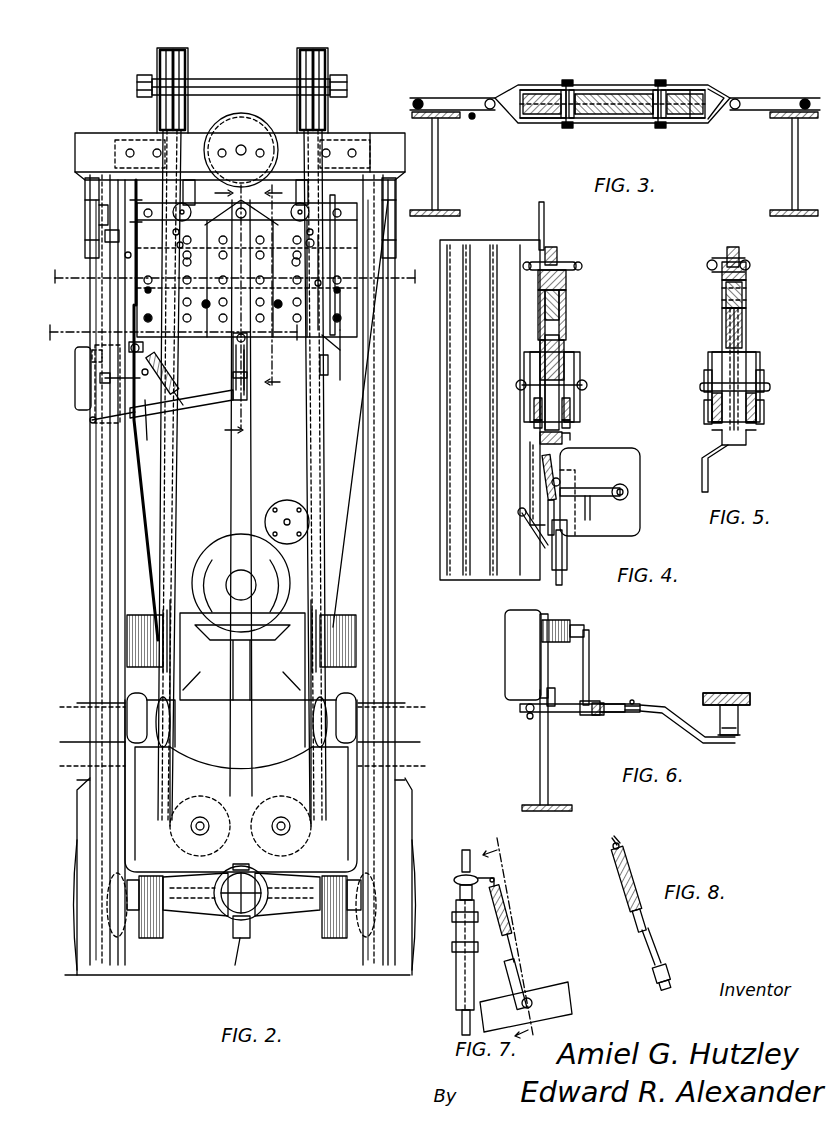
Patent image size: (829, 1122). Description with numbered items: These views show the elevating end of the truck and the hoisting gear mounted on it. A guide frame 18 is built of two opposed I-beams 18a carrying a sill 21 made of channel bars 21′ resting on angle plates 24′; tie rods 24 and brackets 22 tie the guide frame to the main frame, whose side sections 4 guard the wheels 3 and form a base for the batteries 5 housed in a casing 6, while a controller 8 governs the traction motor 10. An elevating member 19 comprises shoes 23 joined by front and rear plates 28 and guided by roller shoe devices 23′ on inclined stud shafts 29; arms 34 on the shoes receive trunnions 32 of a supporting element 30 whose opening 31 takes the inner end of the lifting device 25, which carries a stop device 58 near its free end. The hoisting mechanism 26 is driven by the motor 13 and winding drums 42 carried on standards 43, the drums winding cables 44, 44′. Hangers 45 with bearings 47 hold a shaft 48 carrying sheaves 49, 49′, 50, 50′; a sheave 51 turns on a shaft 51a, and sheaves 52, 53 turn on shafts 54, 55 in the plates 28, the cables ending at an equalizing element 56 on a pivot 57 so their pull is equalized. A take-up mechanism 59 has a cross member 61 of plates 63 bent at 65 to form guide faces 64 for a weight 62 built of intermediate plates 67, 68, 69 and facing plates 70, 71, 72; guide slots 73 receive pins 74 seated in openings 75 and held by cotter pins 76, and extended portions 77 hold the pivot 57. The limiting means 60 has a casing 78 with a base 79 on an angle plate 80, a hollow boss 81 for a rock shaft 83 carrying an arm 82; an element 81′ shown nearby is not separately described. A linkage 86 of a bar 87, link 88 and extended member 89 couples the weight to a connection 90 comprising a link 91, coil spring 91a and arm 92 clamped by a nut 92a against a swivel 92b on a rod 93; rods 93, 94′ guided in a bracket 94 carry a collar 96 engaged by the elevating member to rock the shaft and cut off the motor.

In FIG. 2, the wheel 3 is at (414, 1000).
In FIG. 2, the side section 4 is at (225, 311).
In FIG. 2, the battery 5 is at (277, 287).
In FIG. 2, the casing 6 is at (155, 344).
In FIG. 7, the controller 8 is at (517, 938).
In FIG. 2, the traction or driving motor 10 is at (240, 945).
In FIG. 2, the hoisting or elevating motor 13 is at (241, 583).
In FIG. 2, the guide frame 18 is at (92, 560).
In FIG. 4, the guide frame 18 is at (496, 245).
In FIG. 2, the channel or I-beam 18a is at (92, 638).
In FIG. 3, the channel or I-beam 18a is at (438, 200).
In FIG. 4, the channel or I-beam 18a is at (480, 580).
In FIG. 6, the channel or I-beam 18a is at (549, 770).
In FIG. 2, the elevating member 19 is at (276, 765).
In FIG. 2, the sill 21 is at (103, 137).
In FIG. 2, the channel bar 21′ is at (378, 137).
In FIG. 2, the bracket 22 is at (237, 739).
In FIG. 2, the shoe 23 is at (238, 726).
In FIG. 2, the shoe device 23′ is at (127, 700).
In FIG. 2, the tie rod 24 is at (392, 180).
In FIG. 2, the angle plate 24′ is at (99, 215).
In FIG. 2, the lifting device 25 is at (232, 918).
In FIG. 2, the hoisting or elevating mechanism 26 is at (262, 128).
In FIG. 2, the front and rear plate 28 is at (188, 768).
In FIG. 2, the stud shaft 29 is at (171, 715).
In FIG. 2, the supporting element 30 is at (268, 916).
In FIG. 2, the opening 31 is at (215, 913).
In FIG. 2, the trunnion 32 is at (127, 890).
In FIG. 2, the forwardly projecting arm 34 is at (148, 942).
In FIG. 2, the winding drum 42 is at (128, 630).
In FIG. 2, the standard 43 is at (242, 656).
In FIG. 2, the flexible member or rope 44 is at (165, 50).
In FIG. 2, the flexible member or rope 44′ is at (183, 50).
In FIG. 2, the hanger 45 is at (157, 110).
In FIG. 2, the bearing 47 is at (137, 80).
In FIG. 2, the shaft 48 is at (243, 80).
In FIG. 2, the sheave 49 is at (160, 55).
In FIG. 2, the sheave 49′ is at (184, 55).
In FIG. 2, the sheave 50 is at (300, 55).
In FIG. 2, the sheave 50′ is at (324, 55).
In FIG. 2, the sheave 51 is at (222, 122).
In FIG. 2, the shaft 51a is at (240, 145).
In FIG. 2, the sheave 52 is at (200, 796).
In FIG. 2, the sheave 53 is at (282, 796).
In FIG. 2, the shaft 54 is at (200, 818).
In FIG. 2, the shaft 55 is at (281, 818).
In FIG. 2, the equalizing element 56 is at (198, 202).
In FIG. 4, the equalizing element 56 is at (556, 250).
In FIG. 5, the equalizing element 56 is at (732, 247).
In FIG. 2, the pivot 57 is at (295, 205).
In FIG. 4, the pivot 57 is at (578, 266).
In FIG. 5, the pivot 57 is at (708, 265).
In FIG. 2, the stop device 58 is at (250, 935).
In FIG. 2, the take-up mechanism 59 is at (250, 288).
In FIG. 3, the take-up mechanism 59 is at (590, 120).
In FIG. 4, the take-up mechanism 59 is at (585, 385).
In FIG. 5, the take-up mechanism 59 is at (761, 369).
In FIG. 2, the limiting means 60 is at (85, 384).
In FIG. 4, the limiting means 60 is at (615, 492).
In FIG. 2, the transverse or cross member 61 is at (343, 300).
In FIG. 3, the transverse or cross member 61 is at (480, 98).
In FIG. 4, the transverse or cross member 61 is at (524, 365).
In FIG. 5, the transverse or cross member 61 is at (708, 365).
In FIG. 2, the weight 62 is at (328, 343).
In FIG. 3, the weight 62 is at (620, 90).
In FIG. 4, the weight 62 is at (564, 345).
In FIG. 5, the weight 62 is at (722, 330).
In FIG. 6, the weight 62 is at (745, 693).
In FIG. 2, the plate 63 is at (343, 340).
In FIG. 3, the plate 63 is at (750, 98).
In FIG. 4, the plate 63 is at (532, 355).
In FIG. 5, the plate 63 is at (712, 358).
In FIG. 3, the guide face 64 is at (690, 90).
In FIG. 4, the guide face 64 is at (570, 385).
In FIG. 5, the guide face 64 is at (704, 415).
In FIG. 3, the bend 65 is at (718, 94).
In FIG. 2, the intermediate sectional plate 67 is at (177, 245).
In FIG. 3, the intermediate sectional plate 67 is at (535, 118).
In FIG. 2, the intermediate sectional plate 68 is at (320, 250).
In FIG. 3, the intermediate sectional plate 68 is at (630, 120).
In FIG. 4, the intermediate sectional plate 68 is at (568, 405).
In FIG. 5, the intermediate sectional plate 68 is at (746, 340).
In FIG. 6, the intermediate sectional plate 68 is at (750, 699).
In FIG. 2, the intermediate sectional plate 69 is at (314, 242).
In FIG. 4, the intermediate sectional plate 69 is at (559, 305).
In FIG. 5, the intermediate sectional plate 69 is at (742, 295).
In FIG. 2, the facing plate 70 is at (328, 365).
In FIG. 4, the facing plate 70 is at (534, 424).
In FIG. 5, the facing plate 70 is at (716, 430).
In FIG. 2, the facing plate 71 is at (173, 230).
In FIG. 3, the facing plate 71 is at (525, 92).
In FIG. 2, the facing plate 72 is at (332, 195).
In FIG. 3, the facing plate 72 is at (605, 90).
In FIG. 4, the facing plate 72 is at (538, 310).
In FIG. 5, the facing plate 72 is at (722, 300).
In FIG. 2, the guide slot 73 is at (183, 262).
In FIG. 3, the guide slot 73 is at (557, 90).
In FIG. 5, the guide slot 73 is at (742, 325).
In FIG. 2, the guide element or pin 74 is at (200, 304).
In FIG. 3, the guide element or pin 74 is at (567, 80).
In FIG. 4, the guide element or pin 74 is at (585, 387).
In FIG. 5, the guide element or pin 74 is at (770, 387).
In FIG. 5, the opening 75 is at (756, 395).
In FIG. 3, the cotter pin 76 is at (570, 86).
In FIG. 5, the cotter pin 76 is at (704, 380).
In FIG. 2, the centrally extended portion 77 is at (241, 208).
In FIG. 4, the centrally extended portion 77 is at (538, 280).
In FIG. 5, the centrally extended portion 77 is at (722, 275).
In FIG. 2, the casing 78 is at (77, 395).
In FIG. 6, the casing 78 is at (505, 665).
In FIG. 2, the base member or plate 79 is at (92, 356).
In FIG. 4, the base member or plate 79 is at (640, 455).
In FIG. 6, the base member or plate 79 is at (548, 668).
In FIG. 4, the angle plate 80 is at (568, 545).
In FIG. 6, the angle plate 80 is at (555, 700).
In FIG. 4, the hollow boss 81 is at (628, 494).
In FIG. 6, the hollow boss 81 is at (560, 620).
In FIG. 2, the switch lever 81′ is at (90, 420).
In FIG. 2, the arm 82 is at (110, 375).
In FIG. 4, the arm 82 is at (592, 505).
In FIG. 6, the arm 82 is at (589, 660).
In FIG. 4, the rock shaft 83 is at (628, 488).
In FIG. 6, the rock shaft 83 is at (586, 625).
In FIG. 2, the linkage connection 86 is at (233, 372).
In FIG. 4, the linkage connection 86 is at (540, 438).
In FIG. 6, the linkage connection 86 is at (632, 697).
In FIG. 2, the bar 87 is at (200, 405).
In FIG. 4, the bar 87 is at (530, 535).
In FIG. 6, the bar 87 is at (668, 716).
In FIG. 7, the bar 87 is at (456, 940).
In FIG. 8, the bar 87 is at (650, 968).
In FIG. 2, the link 88 is at (247, 395).
In FIG. 4, the link 88 is at (530, 465).
In FIG. 5, the link 88 is at (710, 490).
In FIG. 6, the link 88 is at (740, 728).
In FIG. 2, the extended member 89 is at (237, 338).
In FIG. 4, the extended member 89 is at (565, 445).
In FIG. 5, the extended member 89 is at (740, 447).
In FIG. 6, the extended member 89 is at (712, 693).
In FIG. 2, the connection 90 is at (172, 392).
In FIG. 6, the connection 90 is at (596, 715).
In FIG. 7, the connection 90 is at (534, 945).
In FIG. 8, the connection 90 is at (630, 925).
In FIG. 2, the link 91 is at (147, 428).
In FIG. 4, the link 91 is at (555, 515).
In FIG. 6, the link 91 is at (633, 713).
In FIG. 7, the link 91 is at (524, 975).
In FIG. 8, the link 91 is at (655, 945).
In FIG. 2, the coil spring 91a is at (168, 380).
In FIG. 4, the coil spring 91a is at (544, 480).
In FIG. 6, the coil spring 91a is at (604, 704).
In FIG. 7, the coil spring 91a is at (508, 912).
In FIG. 8, the coil spring 91a is at (640, 875).
In FIG. 2, the arm 92 is at (138, 342).
In FIG. 6, the arm 92 is at (585, 713).
In FIG. 7, the arm 92 is at (496, 878).
In FIG. 8, the arm 92 is at (616, 838).
In FIG. 2, the nut 92a is at (132, 345).
In FIG. 7, the nut 92a is at (458, 878).
In FIG. 4, the swivel 92b is at (560, 480).
In FIG. 7, the swivel 92b is at (460, 892).
In FIG. 2, the rod 93 is at (125, 255).
In FIG. 3, the rod 93 is at (473, 119).
In FIG. 4, the rod 93 is at (539, 224).
In FIG. 6, the rod 93 is at (530, 720).
In FIG. 7, the rod 93 is at (462, 855).
In FIG. 2, the bracket 94 is at (130, 190).
In FIG. 2, the rod 94′ is at (140, 478).
In FIG. 7, the rod 94′ is at (462, 1012).
In FIG. 2, the collar 96 is at (105, 236).